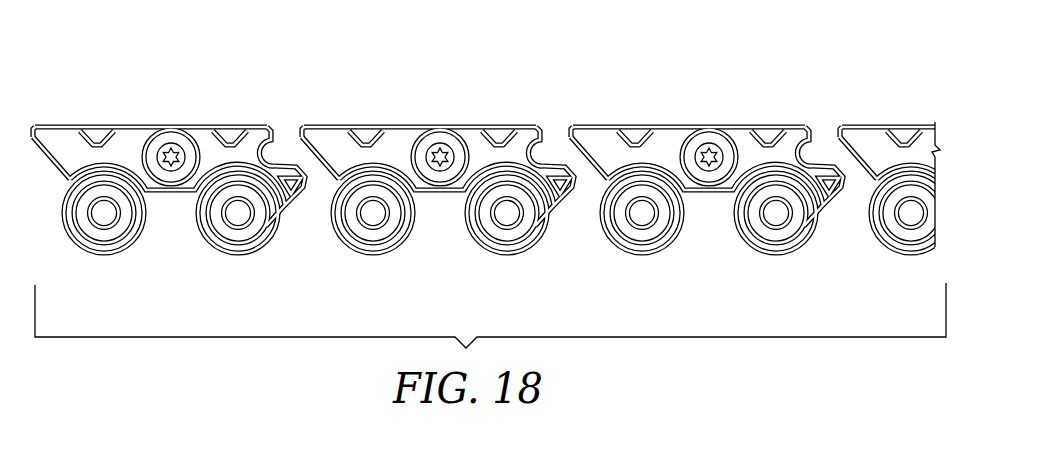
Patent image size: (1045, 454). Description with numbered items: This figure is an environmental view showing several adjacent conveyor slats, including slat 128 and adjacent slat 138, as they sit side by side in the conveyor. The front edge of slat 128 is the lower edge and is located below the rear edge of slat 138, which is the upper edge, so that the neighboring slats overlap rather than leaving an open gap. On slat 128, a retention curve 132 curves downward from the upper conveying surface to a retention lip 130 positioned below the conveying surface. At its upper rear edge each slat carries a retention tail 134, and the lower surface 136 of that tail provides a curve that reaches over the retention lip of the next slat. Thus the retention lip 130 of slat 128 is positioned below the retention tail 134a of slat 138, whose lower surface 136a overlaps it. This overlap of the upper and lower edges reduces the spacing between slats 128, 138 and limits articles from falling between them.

The slat 128 is at (445, 192).
The retention lip 130 is at (577, 205).
The retention curve 132 is at (543, 132).
The retention tail 134 is at (297, 126).
The retention tail of slat 138 134a is at (572, 128).
The lower surface 136 is at (328, 162).
The lower surface of retention tail 134a 136a is at (625, 137).
The adjacent slat 138 is at (705, 190).